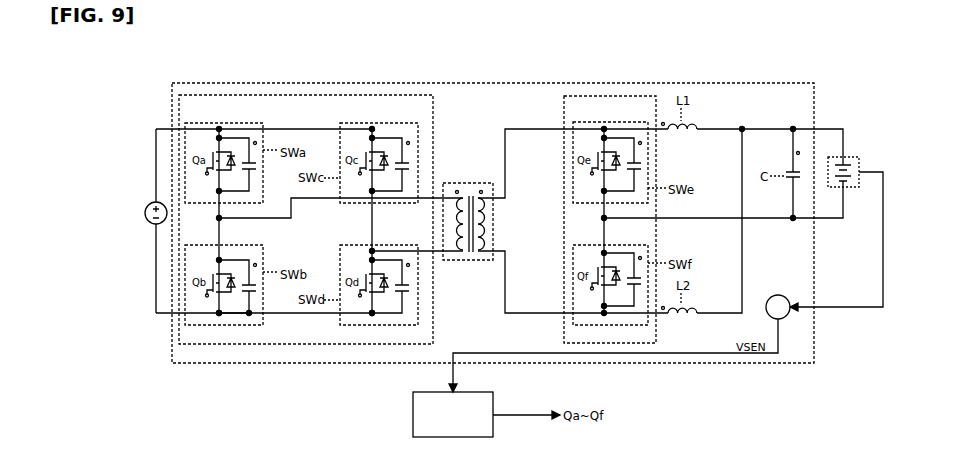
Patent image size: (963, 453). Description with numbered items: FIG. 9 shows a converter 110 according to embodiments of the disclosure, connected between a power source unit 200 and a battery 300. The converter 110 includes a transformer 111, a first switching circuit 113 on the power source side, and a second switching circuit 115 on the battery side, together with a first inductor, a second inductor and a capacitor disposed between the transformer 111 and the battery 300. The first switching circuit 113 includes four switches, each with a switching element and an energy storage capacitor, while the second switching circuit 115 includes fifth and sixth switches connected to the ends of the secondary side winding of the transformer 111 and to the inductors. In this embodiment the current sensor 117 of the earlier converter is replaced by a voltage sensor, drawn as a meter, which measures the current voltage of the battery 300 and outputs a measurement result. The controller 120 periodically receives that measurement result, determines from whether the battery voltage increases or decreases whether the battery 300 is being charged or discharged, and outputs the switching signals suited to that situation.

The converter 110 is at (488, 83).
The transformer 111 is at (475, 183).
The first switching circuit 113 is at (433, 326).
The second switching circuit 115 is at (656, 326).
The current sensor 117 is at (778, 295).
The controller 120 is at (468, 393).
The power source unit 200 is at (149, 205).
The battery 300 is at (851, 156).